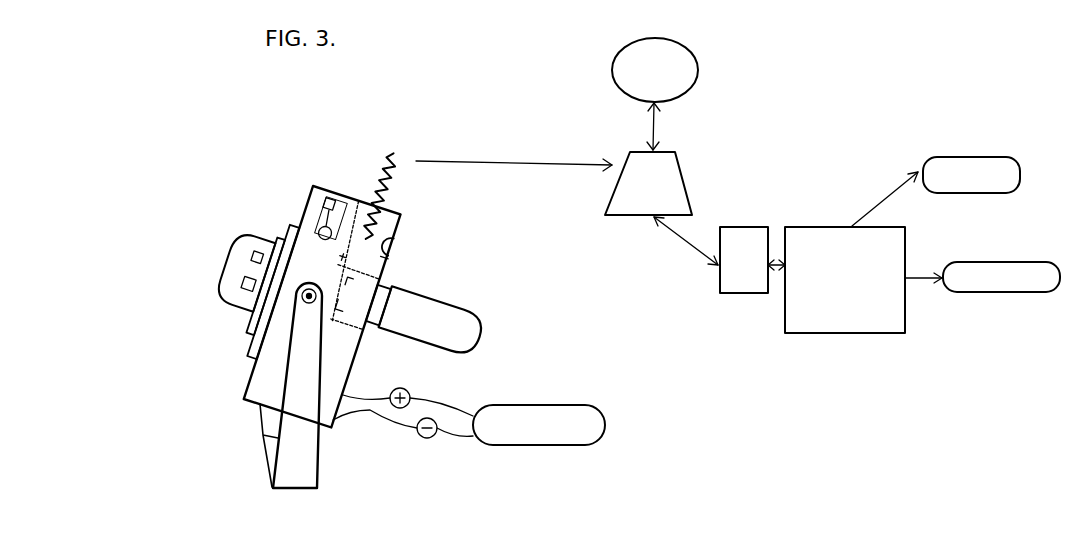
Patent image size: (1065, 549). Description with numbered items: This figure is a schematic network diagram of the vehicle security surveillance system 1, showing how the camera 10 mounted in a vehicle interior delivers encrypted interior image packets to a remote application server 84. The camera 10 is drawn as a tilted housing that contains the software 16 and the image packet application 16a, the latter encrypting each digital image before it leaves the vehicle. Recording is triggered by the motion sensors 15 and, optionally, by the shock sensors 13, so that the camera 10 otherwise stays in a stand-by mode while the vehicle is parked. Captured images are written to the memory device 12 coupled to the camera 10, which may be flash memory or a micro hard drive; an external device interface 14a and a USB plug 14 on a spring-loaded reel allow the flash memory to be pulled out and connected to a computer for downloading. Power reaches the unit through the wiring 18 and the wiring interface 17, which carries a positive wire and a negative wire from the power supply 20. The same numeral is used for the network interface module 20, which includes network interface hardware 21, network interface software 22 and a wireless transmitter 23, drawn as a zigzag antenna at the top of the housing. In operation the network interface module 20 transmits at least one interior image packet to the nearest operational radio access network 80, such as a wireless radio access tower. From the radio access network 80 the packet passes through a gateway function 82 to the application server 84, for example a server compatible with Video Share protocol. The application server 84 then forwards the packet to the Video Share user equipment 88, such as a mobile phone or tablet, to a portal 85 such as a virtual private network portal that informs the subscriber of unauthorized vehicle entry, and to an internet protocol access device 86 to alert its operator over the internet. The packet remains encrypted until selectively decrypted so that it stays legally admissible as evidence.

The vehicle security surveillance system 1 is at (190, 262).
The camera 10 is at (238, 222).
The memory device 12 is at (327, 376).
The shock sensors 13 is at (264, 248).
The USB plug 14 is at (383, 279).
The external device interface 14a is at (363, 327).
The motion sensors 15 is at (246, 289).
The software 16 is at (320, 227).
The image packet application 16a is at (327, 196).
The wiring interface 17 is at (333, 388).
The wiring 18 is at (455, 437).
The network interface module 20 is at (419, 212).
The network interface hardware 21 is at (398, 228).
The network interface software 22 is at (398, 254).
The wireless transmitter 23 is at (403, 188).
The RAN 80 is at (691, 198).
The gateway function 82 is at (740, 297).
The application server 84 is at (803, 337).
The portal 85 is at (962, 195).
The internet protocol access device 86 is at (977, 292).
The Video Share user equipment device 88 is at (688, 95).